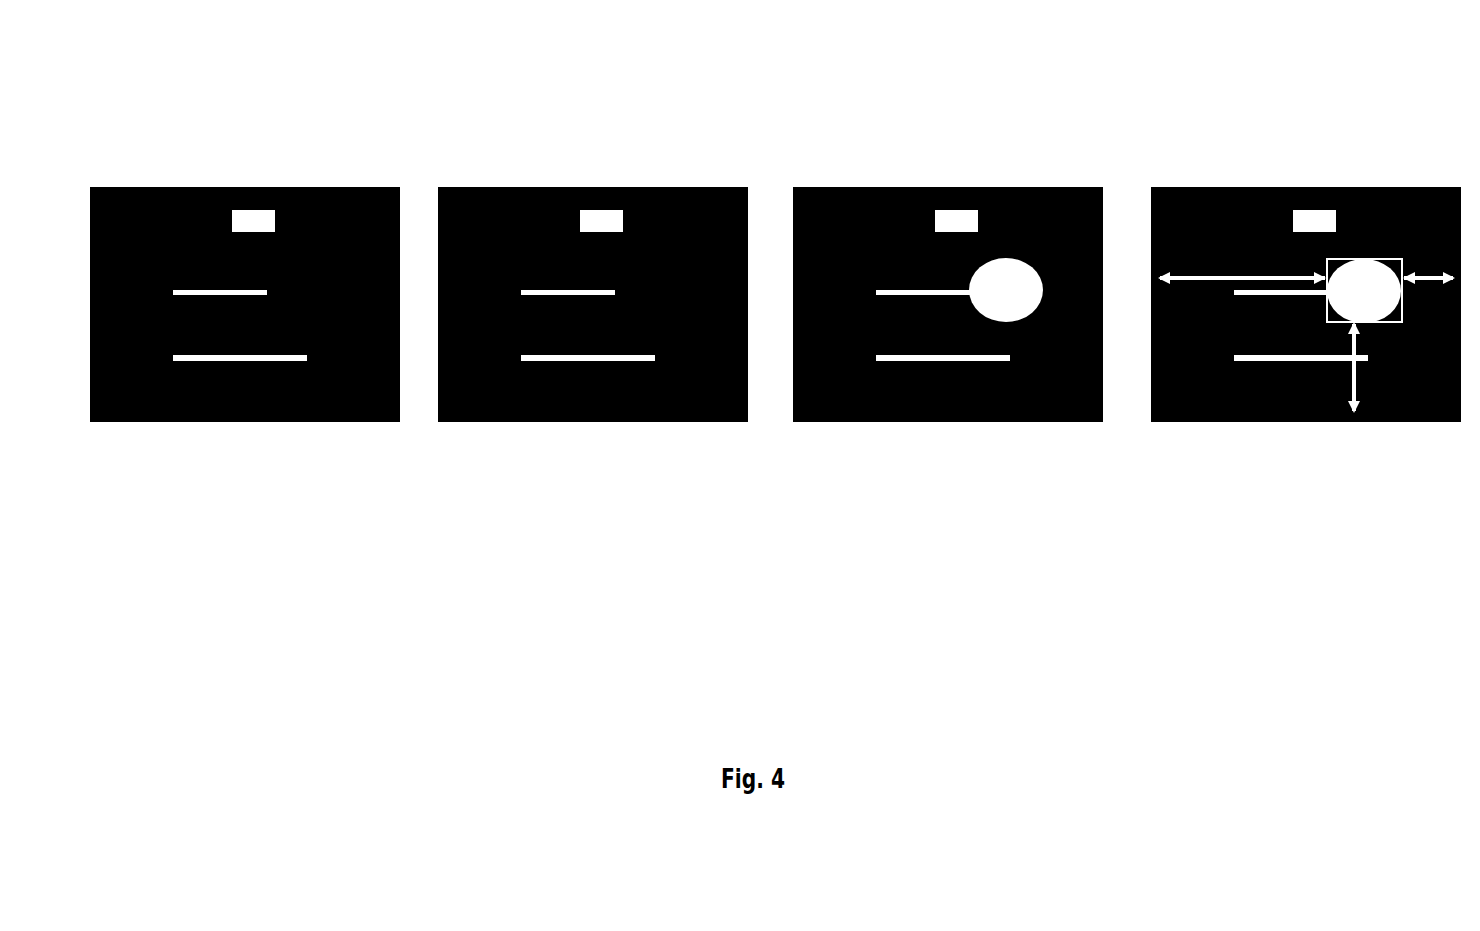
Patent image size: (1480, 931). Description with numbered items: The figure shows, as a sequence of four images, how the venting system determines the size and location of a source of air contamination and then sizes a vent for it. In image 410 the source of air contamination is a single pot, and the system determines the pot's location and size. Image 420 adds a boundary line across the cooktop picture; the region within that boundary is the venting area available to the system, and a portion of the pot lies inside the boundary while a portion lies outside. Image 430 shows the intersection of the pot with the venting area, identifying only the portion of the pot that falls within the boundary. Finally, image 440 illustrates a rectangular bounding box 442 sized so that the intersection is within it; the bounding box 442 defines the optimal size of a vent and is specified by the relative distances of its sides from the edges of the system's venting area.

The image 410 is at (245, 289).
The image 420 is at (593, 272).
The image 430 is at (948, 272).
The image 440 is at (1307, 249).
The bounding box 442 is at (1338, 250).